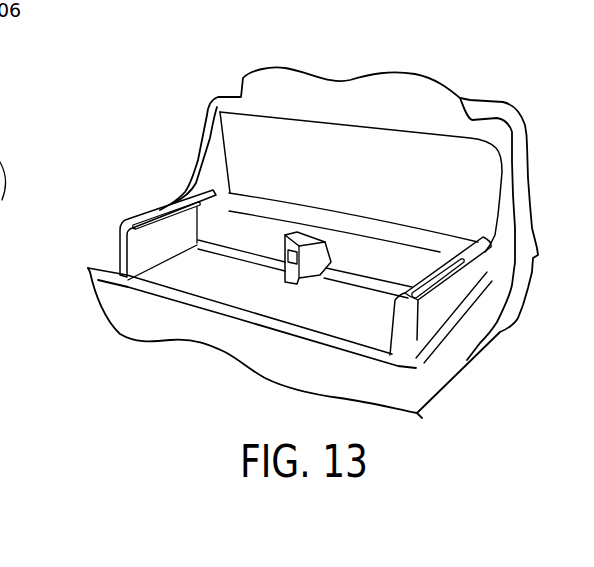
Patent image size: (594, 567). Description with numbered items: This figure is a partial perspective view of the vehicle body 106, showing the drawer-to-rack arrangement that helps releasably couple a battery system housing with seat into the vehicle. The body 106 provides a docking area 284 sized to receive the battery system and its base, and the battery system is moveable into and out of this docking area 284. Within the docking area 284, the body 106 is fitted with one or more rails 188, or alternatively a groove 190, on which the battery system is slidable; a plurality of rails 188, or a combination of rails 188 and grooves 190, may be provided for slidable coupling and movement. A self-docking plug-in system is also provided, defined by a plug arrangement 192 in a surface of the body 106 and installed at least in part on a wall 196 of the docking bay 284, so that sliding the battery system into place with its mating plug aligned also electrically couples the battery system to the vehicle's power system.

The body 106 is at (477, 183).
The rail 188 is at (158, 210).
The groove 190 is at (284, 267).
The plug arrangement 192 is at (293, 232).
The wall 196 is at (382, 262).
The docking area 284 is at (192, 278).